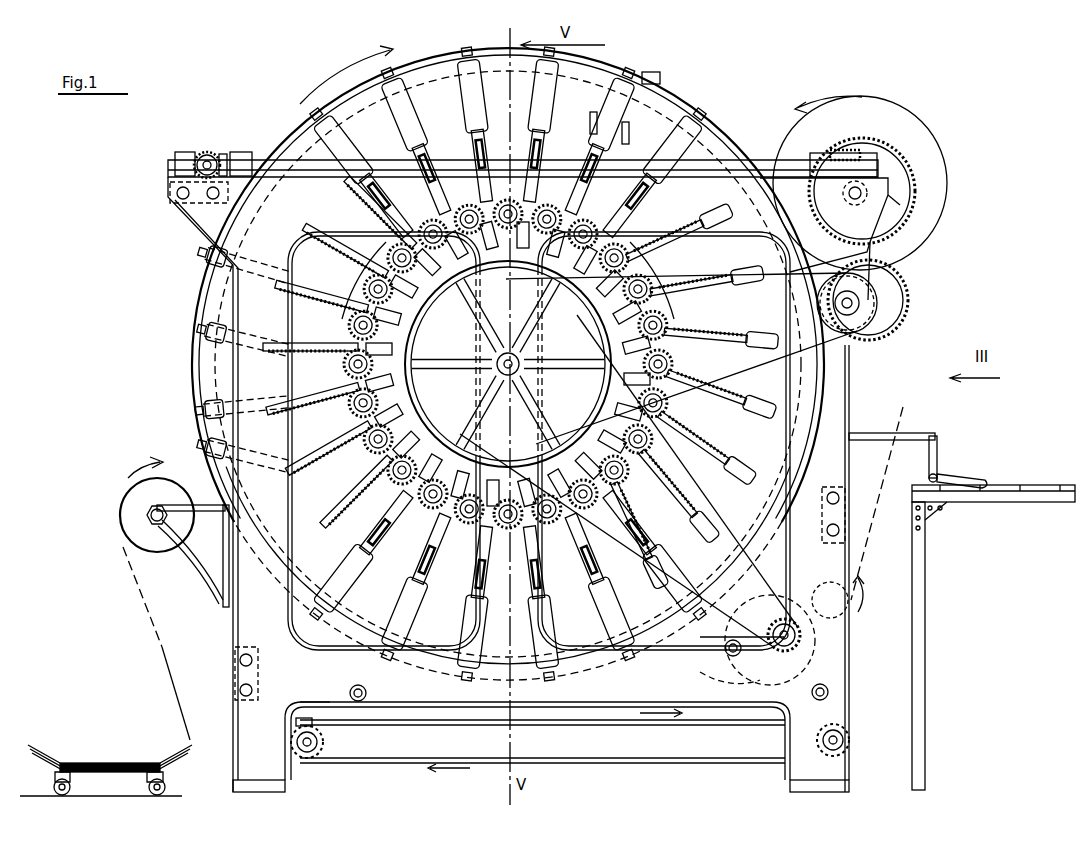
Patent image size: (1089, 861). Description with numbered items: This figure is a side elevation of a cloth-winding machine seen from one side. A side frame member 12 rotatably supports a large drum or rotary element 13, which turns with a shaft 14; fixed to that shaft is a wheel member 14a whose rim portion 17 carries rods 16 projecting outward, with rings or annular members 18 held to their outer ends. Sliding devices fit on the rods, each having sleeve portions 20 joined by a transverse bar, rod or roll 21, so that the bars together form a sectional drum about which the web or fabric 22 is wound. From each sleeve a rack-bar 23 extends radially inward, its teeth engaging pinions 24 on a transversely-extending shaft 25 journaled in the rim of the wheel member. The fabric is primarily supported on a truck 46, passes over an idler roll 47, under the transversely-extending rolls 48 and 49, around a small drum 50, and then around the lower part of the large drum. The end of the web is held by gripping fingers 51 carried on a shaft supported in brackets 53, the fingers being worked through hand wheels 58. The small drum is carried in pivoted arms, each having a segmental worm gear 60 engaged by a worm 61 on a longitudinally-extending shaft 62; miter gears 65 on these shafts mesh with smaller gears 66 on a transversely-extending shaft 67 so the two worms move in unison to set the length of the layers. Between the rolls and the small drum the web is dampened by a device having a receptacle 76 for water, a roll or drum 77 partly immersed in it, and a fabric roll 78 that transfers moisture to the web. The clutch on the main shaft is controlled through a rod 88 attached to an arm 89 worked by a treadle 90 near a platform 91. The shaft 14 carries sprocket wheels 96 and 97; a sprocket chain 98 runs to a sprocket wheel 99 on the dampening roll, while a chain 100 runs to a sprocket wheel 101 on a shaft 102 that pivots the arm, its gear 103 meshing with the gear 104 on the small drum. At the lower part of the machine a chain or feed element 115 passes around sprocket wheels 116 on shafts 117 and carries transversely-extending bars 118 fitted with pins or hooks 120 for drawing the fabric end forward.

The frame member 12 is at (850, 400).
The drum or rotary element 13 is at (195, 284).
The shaft 14 is at (497, 360).
The wheel member 14a is at (476, 392).
The rods 16 is at (538, 130).
The rim portion 17 is at (346, 352).
The rings or annular members 18 is at (645, 90).
The sleeve portion 20 is at (400, 95).
The bar, rod or roll 21 is at (330, 112).
The web or fabric 22 is at (160, 641).
The rack-bar 23 is at (356, 245).
The pinions 24 is at (350, 324).
The transversely-extending shaft 25 is at (368, 318).
The truck 46 is at (94, 762).
The idler roll 47 is at (158, 546).
The transversely-extending roll 48 is at (368, 690).
The transversely-extending roll 49 is at (830, 694).
The small drum 50 is at (932, 172).
The gripping fingers 51 is at (648, 73).
The brackets 53 is at (600, 112).
The hand wheels 58 is at (590, 124).
The segmental worm gear 60 is at (902, 204).
The worm 61 is at (850, 150).
The longitudinally-extending shaft 62 is at (612, 158).
The miter gears 65 is at (227, 154).
The smaller gears 66 is at (206, 152).
The transversely-extending shaft 67 is at (182, 162).
The receptacle 76 is at (756, 679).
The roll or drum 77 is at (780, 612).
The fabric roll 78 is at (848, 590).
The rod 88 is at (888, 441).
The arm 89 is at (938, 448).
The treadle 90 is at (966, 478).
The platform 91 is at (1016, 486).
The sprocket wheel 96 is at (602, 327).
The sprocket wheel 97 is at (606, 389).
The sprocket chain 98 is at (698, 466).
The sprocket wheel 99 is at (788, 665).
The chain 100 is at (706, 395).
The sprocket wheel 101 is at (826, 278).
The shaft 102 is at (860, 305).
The gear 103 is at (900, 297).
The gear 104 is at (912, 216).
The chain or feed element 115 is at (537, 742).
The sprocket wheels 116 is at (322, 742).
The shafts 117 is at (318, 758).
The transversely-extending bars 118 is at (298, 718).
The pins or hooks 120 is at (336, 701).